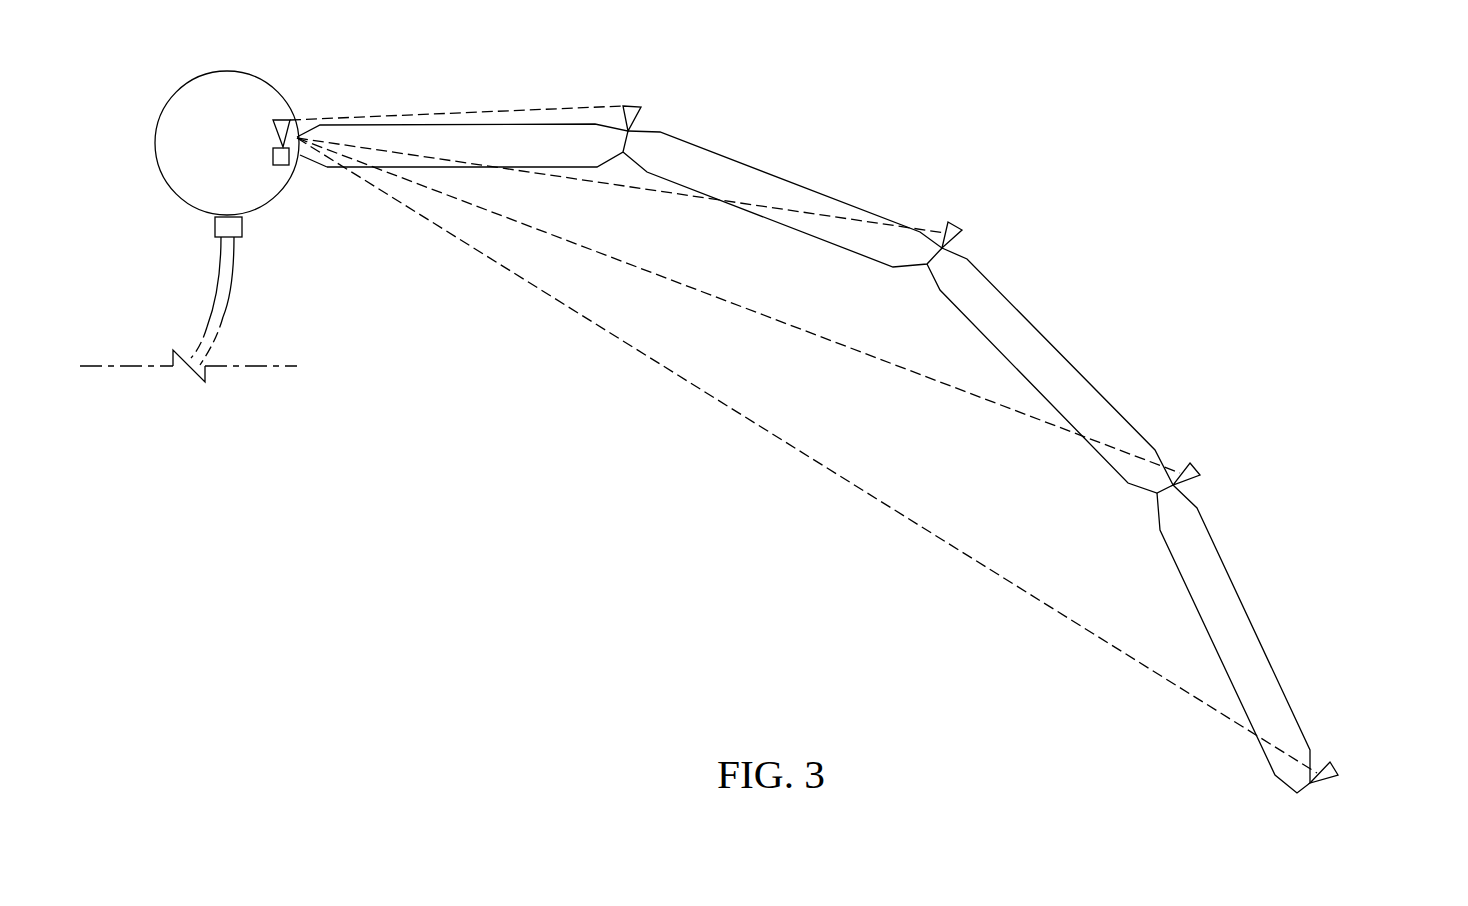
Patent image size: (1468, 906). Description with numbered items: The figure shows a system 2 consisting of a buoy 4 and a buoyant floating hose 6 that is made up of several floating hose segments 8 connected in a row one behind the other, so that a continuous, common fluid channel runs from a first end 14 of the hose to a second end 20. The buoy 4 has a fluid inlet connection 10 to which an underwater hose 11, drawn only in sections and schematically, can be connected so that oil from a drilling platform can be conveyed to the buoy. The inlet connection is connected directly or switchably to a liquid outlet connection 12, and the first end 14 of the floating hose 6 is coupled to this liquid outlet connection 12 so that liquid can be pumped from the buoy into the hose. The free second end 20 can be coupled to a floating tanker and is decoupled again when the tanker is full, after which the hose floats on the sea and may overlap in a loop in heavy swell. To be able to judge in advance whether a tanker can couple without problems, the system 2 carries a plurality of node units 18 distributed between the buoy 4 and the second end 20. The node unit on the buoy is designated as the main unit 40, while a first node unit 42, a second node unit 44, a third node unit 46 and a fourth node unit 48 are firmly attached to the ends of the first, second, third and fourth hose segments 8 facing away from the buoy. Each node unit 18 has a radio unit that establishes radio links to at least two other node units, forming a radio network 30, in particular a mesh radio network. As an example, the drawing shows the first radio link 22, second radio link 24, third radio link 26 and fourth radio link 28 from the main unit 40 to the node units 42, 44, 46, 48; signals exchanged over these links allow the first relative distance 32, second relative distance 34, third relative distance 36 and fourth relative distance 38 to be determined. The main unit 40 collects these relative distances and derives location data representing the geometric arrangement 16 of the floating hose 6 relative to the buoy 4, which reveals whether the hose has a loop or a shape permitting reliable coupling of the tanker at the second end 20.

The system 2 is at (898, 122).
The buoy 4 is at (256, 72).
The floating hose 6 is at (1107, 312).
The floating hose segment 8 is at (524, 158).
The fluid inlet connection 10 is at (208, 229).
The underwater hose 11 is at (208, 294).
The liquid outlet connection 12 is at (300, 176).
The first end 14 is at (323, 180).
The geometric arrangement 16 is at (1059, 114).
The node unit 18 is at (1121, 182).
The second end 20 is at (1322, 755).
The first radio link 22 is at (456, 88).
The second radio link 24 is at (621, 192).
The third radio link 26 is at (738, 305).
The fourth radio link 28 is at (807, 455).
The radio network 30 is at (664, 441).
The first relative distance 32 is at (466, 112).
The second relative distance 34 is at (658, 192).
The third relative distance 36 is at (723, 301).
The fourth relative distance 38 is at (785, 443).
The main unit 40 is at (268, 152).
The first node unit 42 is at (644, 101).
The second node unit 44 is at (964, 238).
The third node unit 46 is at (1205, 480).
The fourth node unit 48 is at (1347, 761).